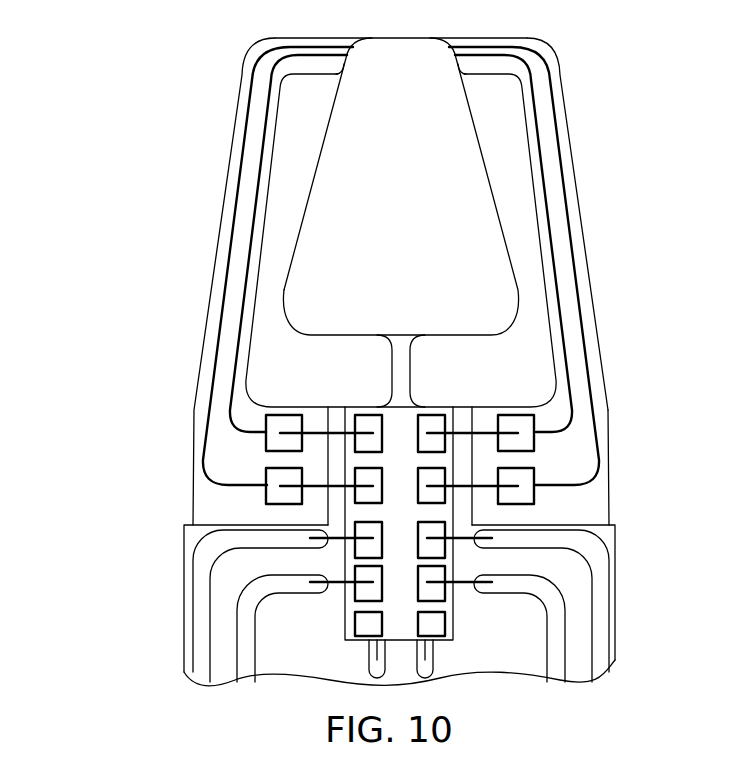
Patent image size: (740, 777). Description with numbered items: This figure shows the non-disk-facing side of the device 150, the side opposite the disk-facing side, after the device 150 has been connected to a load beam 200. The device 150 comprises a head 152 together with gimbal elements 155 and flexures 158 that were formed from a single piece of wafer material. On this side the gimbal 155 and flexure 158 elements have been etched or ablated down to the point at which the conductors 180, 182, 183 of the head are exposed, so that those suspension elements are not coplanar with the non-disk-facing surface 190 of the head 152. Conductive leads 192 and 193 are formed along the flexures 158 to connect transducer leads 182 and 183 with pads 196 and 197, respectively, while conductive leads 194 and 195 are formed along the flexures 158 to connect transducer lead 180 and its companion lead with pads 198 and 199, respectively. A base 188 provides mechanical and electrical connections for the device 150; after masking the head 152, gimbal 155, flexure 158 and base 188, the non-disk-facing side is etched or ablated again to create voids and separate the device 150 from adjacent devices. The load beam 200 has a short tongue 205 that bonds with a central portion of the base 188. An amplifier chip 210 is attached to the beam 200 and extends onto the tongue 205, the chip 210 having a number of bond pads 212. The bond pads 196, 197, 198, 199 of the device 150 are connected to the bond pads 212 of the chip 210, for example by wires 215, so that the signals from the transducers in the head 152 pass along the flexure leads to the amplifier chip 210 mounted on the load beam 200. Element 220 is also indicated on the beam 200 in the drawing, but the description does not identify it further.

The device 150 is at (118, 247).
The head 152 is at (305, 201).
The gimbal elements 155 is at (310, 76).
The flexures 158 is at (232, 136).
The conductive lead 180 is at (220, 20).
The conductive lead 182 is at (530, 80).
The conductive lead 183 is at (273, 81).
The base 188 is at (600, 493).
The non-disk-facing surface 190 is at (423, 204).
The conductive lead 192 is at (556, 261).
The conductive lead 193 is at (248, 268).
The conductive lead 194 is at (582, 312).
The conductive lead 195 is at (222, 311).
The pad 196 is at (516, 413).
The pad 197 is at (283, 413).
The pad 198 is at (533, 495).
The pad 199 is at (267, 492).
The load beam 200 is at (193, 585).
The short tongue 205 is at (343, 407).
The amplifier chip 210 is at (452, 630).
The bond pads 212 is at (352, 595).
The wires 215 is at (460, 436).
The ground trace 220 is at (555, 640).